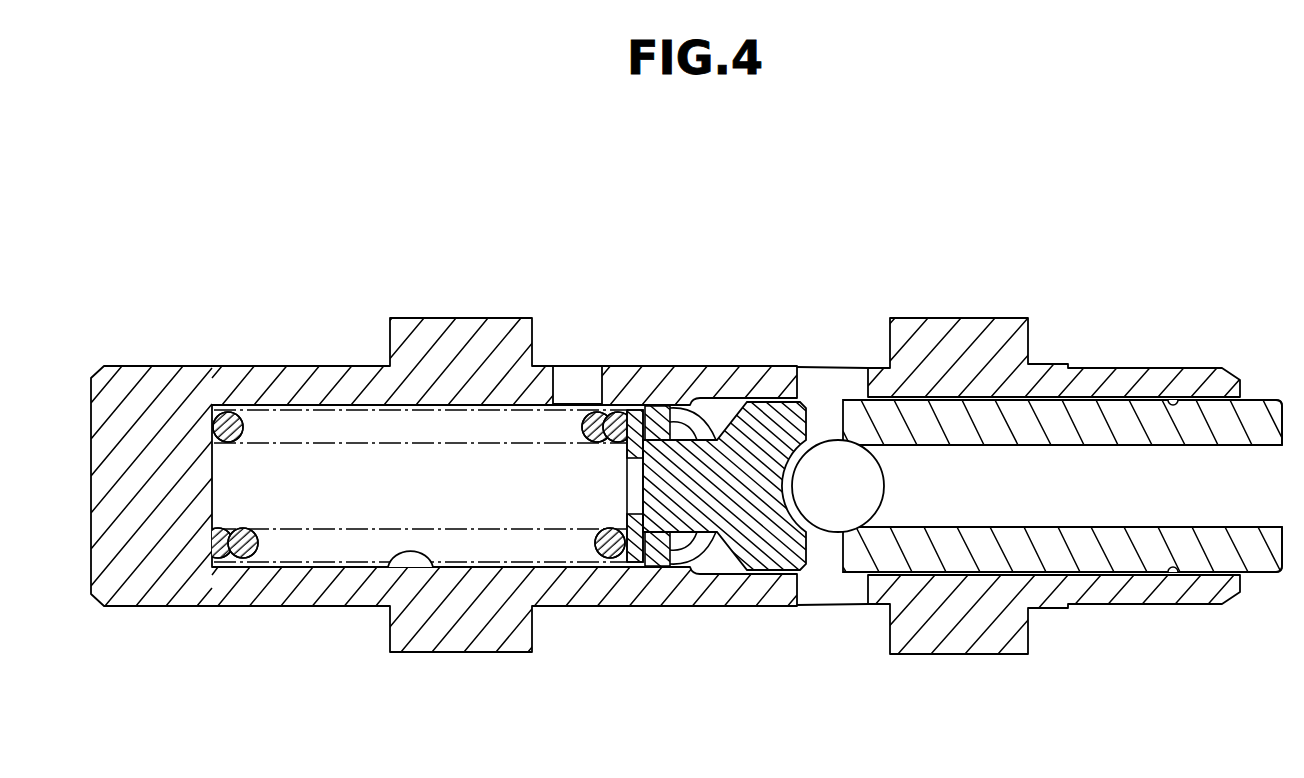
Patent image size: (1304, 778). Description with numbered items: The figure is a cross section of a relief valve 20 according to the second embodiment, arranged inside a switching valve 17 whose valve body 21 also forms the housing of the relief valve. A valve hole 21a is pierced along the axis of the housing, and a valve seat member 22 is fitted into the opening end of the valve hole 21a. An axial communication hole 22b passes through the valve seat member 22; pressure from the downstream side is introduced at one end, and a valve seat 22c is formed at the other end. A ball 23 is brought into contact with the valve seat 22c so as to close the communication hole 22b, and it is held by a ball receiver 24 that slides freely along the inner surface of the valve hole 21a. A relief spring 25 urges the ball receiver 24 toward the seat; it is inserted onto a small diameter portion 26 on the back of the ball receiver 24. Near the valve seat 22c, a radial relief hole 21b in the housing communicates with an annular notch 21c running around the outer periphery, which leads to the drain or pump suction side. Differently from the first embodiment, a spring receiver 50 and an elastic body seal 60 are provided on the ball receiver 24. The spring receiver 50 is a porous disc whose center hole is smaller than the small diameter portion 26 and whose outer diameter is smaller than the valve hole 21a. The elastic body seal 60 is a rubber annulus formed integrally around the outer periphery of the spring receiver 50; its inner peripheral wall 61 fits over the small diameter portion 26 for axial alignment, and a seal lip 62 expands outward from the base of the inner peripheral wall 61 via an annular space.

The switching valve 17 is at (1045, 483).
The relief valve 20 is at (484, 268).
The valve body 21 is at (918, 340).
The valve hole 21a is at (392, 565).
The relief hole 21b is at (848, 604).
The annular notch 21c is at (578, 607).
The valve seat member 22 is at (1068, 415).
The communication hole 22b is at (1245, 462).
The valve seat 22c is at (845, 443).
The ball 23 is at (826, 440).
The ball receiver 24 is at (766, 557).
The relief spring 25 is at (232, 552).
The small diameter portion 26 is at (703, 535).
The spring receiver 50 is at (633, 410).
The elastic body seal 60 is at (655, 420).
The inner peripheral wall 61 is at (705, 432).
The seal lip 62 is at (688, 412).